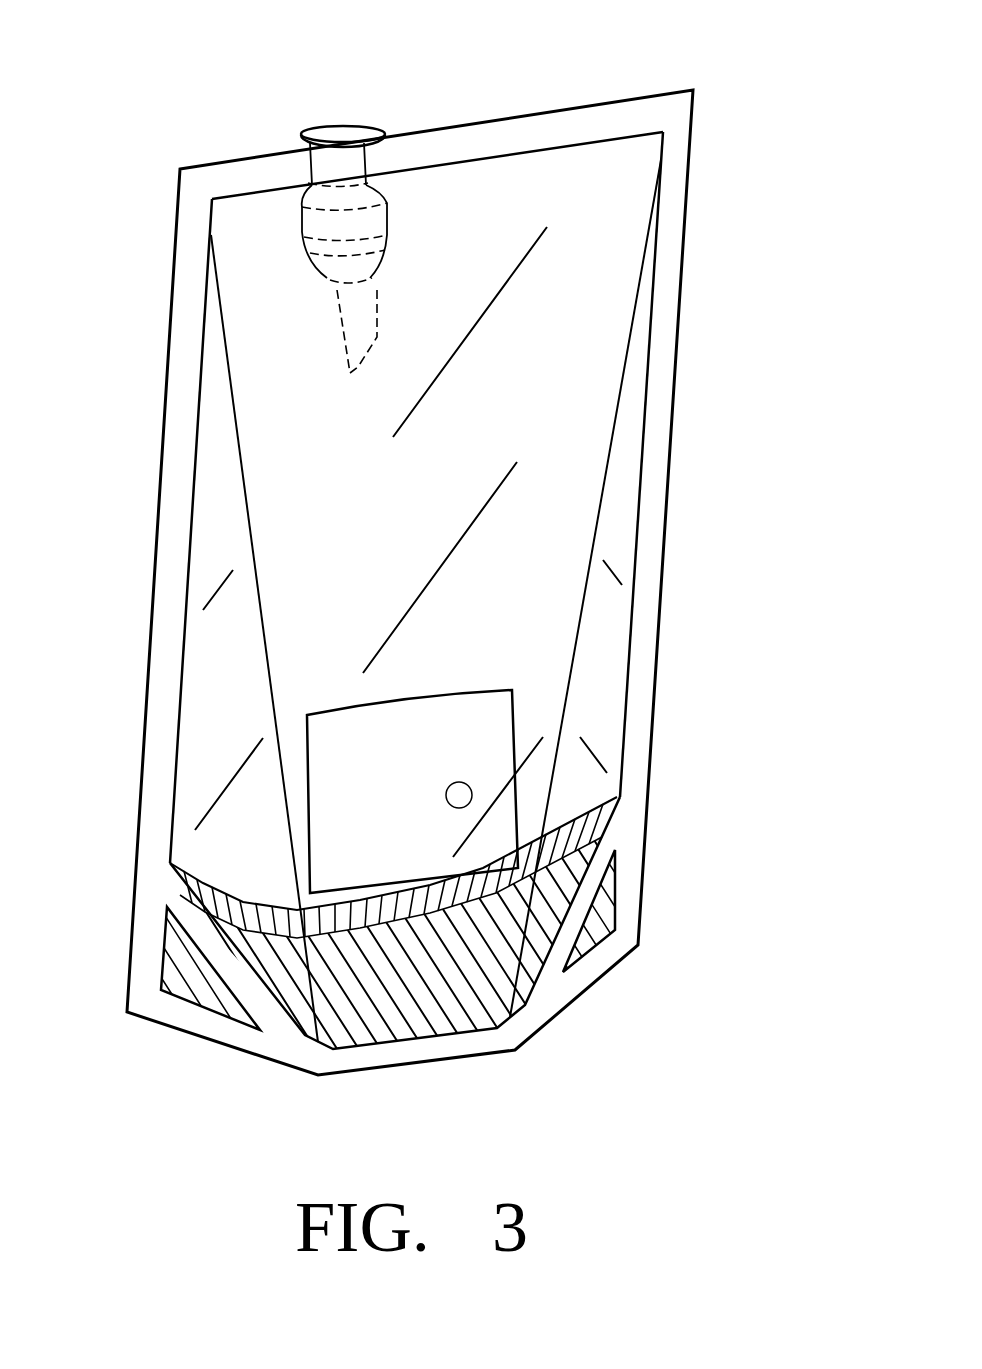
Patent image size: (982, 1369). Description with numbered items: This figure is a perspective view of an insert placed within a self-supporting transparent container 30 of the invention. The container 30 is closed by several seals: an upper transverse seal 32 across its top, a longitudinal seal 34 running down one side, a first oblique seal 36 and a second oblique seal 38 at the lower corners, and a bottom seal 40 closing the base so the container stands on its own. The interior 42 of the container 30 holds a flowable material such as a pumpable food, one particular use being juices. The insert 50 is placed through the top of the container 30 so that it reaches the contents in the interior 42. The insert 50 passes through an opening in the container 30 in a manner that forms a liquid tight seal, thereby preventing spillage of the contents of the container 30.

The container 30 is at (760, 292).
The upper transverse seal 32 is at (492, 120).
The longitudinal seal 34 is at (163, 553).
The first oblique seal 36 is at (243, 987).
The second oblique seal 38 is at (590, 888).
The bottom seal 40 is at (422, 1057).
The interior 42 is at (570, 508).
The insert 50 is at (325, 123).